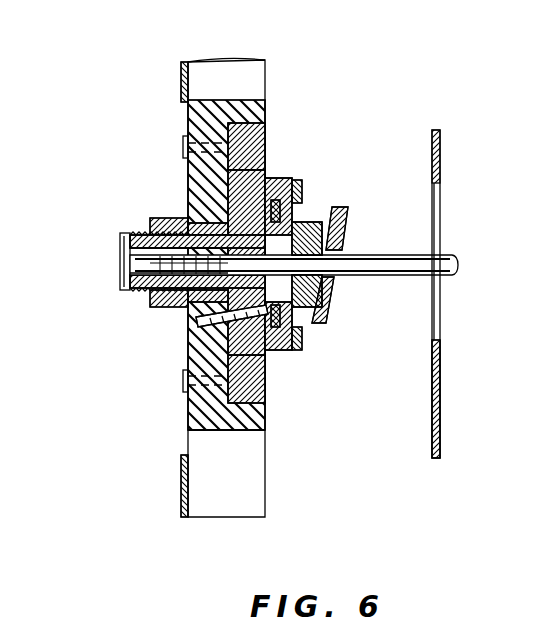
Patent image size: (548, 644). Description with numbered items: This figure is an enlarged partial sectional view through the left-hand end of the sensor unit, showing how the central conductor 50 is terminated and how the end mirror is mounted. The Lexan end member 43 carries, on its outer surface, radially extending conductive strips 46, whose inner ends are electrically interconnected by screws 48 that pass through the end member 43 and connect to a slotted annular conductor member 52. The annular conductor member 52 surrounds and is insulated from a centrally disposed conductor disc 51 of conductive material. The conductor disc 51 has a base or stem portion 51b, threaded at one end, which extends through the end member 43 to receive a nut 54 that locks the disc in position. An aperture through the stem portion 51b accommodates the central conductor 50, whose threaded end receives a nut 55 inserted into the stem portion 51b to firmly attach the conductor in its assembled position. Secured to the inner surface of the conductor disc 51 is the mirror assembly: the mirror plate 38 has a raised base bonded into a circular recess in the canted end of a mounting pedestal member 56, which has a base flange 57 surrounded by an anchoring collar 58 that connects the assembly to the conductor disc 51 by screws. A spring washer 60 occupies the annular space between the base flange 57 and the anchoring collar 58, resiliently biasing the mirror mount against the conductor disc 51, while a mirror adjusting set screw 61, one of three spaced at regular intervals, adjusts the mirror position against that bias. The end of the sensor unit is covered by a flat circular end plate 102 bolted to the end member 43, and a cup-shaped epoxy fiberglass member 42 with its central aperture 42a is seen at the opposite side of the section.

The end plate 102 is at (182, 72).
The conductive strips 46 is at (187, 76).
The screws 48 is at (186, 146).
The slotted annular conductor member 52 is at (264, 128).
The base flange 57 is at (266, 345).
The conductor disc 51 is at (258, 215).
The stem portion 51b is at (127, 240).
The nut 54 is at (160, 218).
The nut 55 is at (120, 243).
The central conductor 50 is at (447, 258).
The anchoring collar 58 is at (284, 195).
The spring washer 60 is at (294, 180).
The mounting pedestal member 56 is at (317, 222).
The mirror plate 38 is at (345, 214).
The cup-shaped epoxy fiberglass member 42 is at (438, 160).
The central aperture 42a is at (438, 342).
The mirror adjusting set screw 61 is at (197, 322).
The end member 43 is at (262, 425).